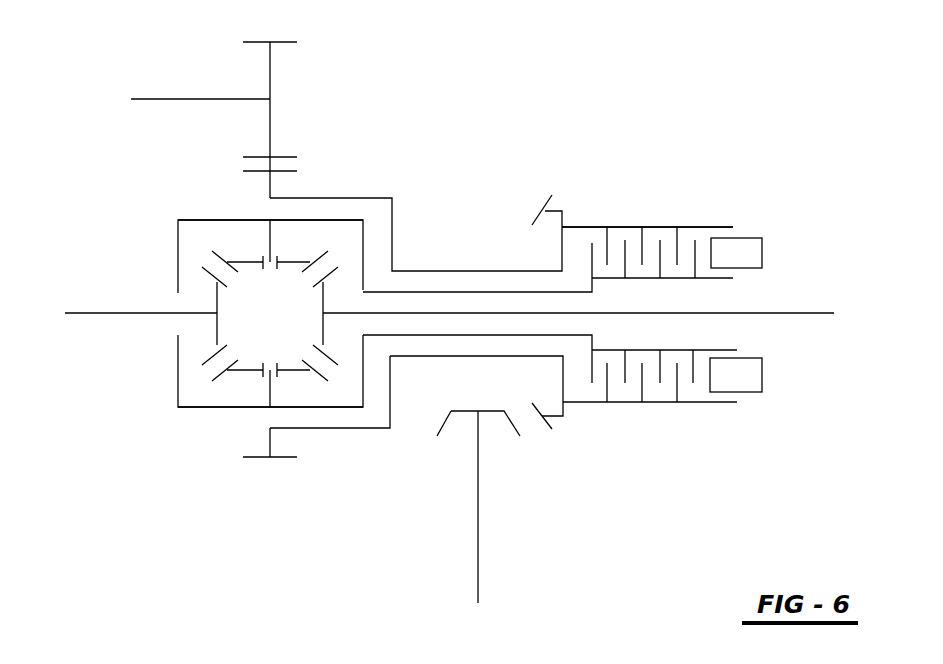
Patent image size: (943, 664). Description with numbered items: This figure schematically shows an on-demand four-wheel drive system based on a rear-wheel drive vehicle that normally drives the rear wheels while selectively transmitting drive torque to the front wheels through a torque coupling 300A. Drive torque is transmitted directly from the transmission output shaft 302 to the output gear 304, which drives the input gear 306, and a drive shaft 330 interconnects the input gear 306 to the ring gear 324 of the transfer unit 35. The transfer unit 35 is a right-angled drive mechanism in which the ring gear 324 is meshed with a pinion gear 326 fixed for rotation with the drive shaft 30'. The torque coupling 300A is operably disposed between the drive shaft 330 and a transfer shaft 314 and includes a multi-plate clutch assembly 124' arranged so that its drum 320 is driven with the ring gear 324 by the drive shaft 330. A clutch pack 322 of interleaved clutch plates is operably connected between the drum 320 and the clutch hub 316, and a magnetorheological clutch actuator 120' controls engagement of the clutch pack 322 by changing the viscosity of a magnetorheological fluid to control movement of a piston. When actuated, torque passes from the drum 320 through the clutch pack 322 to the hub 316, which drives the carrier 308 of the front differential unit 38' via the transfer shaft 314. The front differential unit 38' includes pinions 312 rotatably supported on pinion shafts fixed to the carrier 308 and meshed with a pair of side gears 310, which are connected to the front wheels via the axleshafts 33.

The axleshafts 33 is at (100, 312).
The output shaft 302 is at (157, 98).
The output gear 304 is at (258, 40).
The input gear 306 is at (280, 457).
The carrier 308 is at (222, 218).
The side gears 310 is at (323, 332).
The pinions 312 is at (284, 262).
The transfer shaft 314 is at (422, 290).
The clutch hub 316 is at (642, 278).
The drum 320 is at (660, 402).
The clutch pack 322 is at (650, 236).
The ring gear 324 is at (545, 208).
The pinion gear 326 is at (472, 410).
The drive shaft 330 is at (483, 356).
The transfer unit 35 is at (546, 455).
The drive shaft 30' is at (521, 507).
The front differential unit 38' is at (224, 362).
The clutch assembly 124' is at (583, 253).
The magnetorheological clutch actuator 120' is at (791, 293).
The torque coupling 300A is at (826, 164).